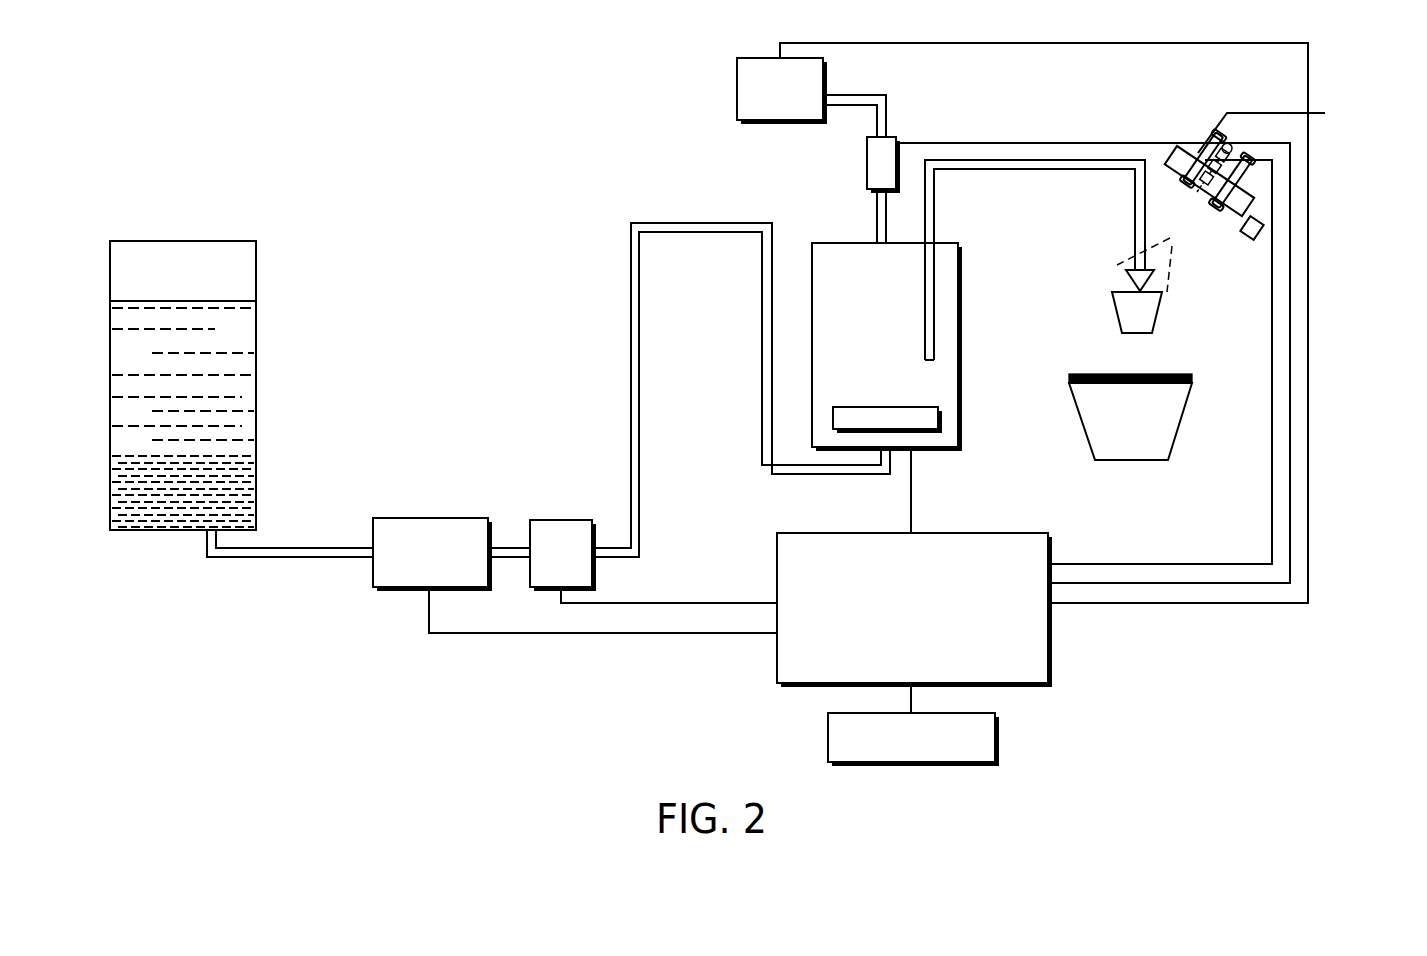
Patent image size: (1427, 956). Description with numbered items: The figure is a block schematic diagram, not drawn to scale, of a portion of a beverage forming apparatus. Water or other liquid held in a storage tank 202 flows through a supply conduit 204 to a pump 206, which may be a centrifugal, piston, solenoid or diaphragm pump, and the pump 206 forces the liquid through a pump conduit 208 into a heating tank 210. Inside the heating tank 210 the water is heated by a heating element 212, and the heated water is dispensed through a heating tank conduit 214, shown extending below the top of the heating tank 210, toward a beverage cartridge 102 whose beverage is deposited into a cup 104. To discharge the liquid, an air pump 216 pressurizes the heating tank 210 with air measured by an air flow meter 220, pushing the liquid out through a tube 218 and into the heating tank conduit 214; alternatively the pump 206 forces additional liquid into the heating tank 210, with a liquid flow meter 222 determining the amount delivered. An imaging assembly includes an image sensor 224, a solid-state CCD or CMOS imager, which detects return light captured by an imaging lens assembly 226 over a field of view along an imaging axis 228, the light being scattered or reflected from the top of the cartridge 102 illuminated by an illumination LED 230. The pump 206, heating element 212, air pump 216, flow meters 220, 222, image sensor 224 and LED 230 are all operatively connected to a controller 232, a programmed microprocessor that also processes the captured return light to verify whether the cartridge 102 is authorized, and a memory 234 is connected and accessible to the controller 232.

The beverage cartridge 102 is at (1119, 291).
The cup 104 is at (1181, 420).
The storage tank 202 is at (110, 382).
The supply conduit 204 is at (290, 558).
The pump 206 is at (395, 590).
The pump conduit 208 is at (631, 383).
The heating tank 210 is at (958, 346).
The heating element 212 is at (885, 407).
The heating tank conduit 214 is at (1033, 171).
The air pump 216 is at (737, 88).
The tube 218 is at (935, 207).
The air flow meter 220 is at (867, 162).
The liquid flow meter 222 is at (560, 519).
The image sensor 224 is at (1243, 207).
The imaging lens assembly 226 is at (1198, 241).
The imaging axis 228 is at (1157, 261).
The illumination light emitting diode 230 is at (1262, 226).
The controller 232 is at (1050, 643).
The memory 234 is at (997, 738).